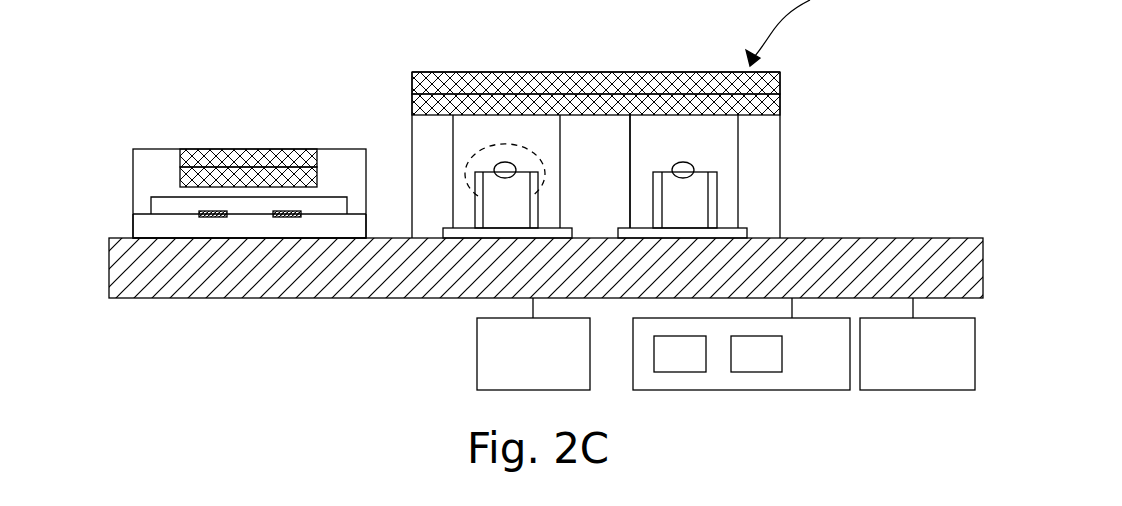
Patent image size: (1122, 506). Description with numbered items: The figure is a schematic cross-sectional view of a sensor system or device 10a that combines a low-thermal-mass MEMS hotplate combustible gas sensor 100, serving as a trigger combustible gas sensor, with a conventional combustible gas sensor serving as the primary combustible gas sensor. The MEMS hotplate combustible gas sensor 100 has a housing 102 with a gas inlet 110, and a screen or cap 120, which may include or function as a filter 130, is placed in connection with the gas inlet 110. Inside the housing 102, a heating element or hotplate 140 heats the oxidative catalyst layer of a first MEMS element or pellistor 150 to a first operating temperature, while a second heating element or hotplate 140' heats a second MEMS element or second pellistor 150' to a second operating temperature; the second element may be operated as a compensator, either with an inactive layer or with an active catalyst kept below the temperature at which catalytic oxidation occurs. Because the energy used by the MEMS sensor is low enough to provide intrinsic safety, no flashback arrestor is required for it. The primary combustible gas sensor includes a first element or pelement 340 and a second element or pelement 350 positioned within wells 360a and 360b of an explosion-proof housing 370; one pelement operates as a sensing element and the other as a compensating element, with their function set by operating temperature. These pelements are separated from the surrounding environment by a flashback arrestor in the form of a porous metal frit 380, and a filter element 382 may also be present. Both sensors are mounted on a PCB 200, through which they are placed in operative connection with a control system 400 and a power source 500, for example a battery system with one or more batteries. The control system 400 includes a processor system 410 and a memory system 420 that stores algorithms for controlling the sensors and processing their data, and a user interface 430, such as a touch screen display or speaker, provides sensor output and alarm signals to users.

The sensor system 10a is at (884, 29).
The MEMS hotplate combustible gas sensor 100 is at (116, 133).
The housing 102 is at (133, 214).
The gas inlet 110 is at (182, 168).
The screen or cap 120 is at (203, 157).
The filter 130 is at (242, 175).
The heating element or hotplate 140 is at (190, 289).
The heating element or hotplate 140' is at (288, 281).
The first MEMS element or pellistor 150 is at (158, 181).
The second MEMS element or second pellistor 150' is at (316, 164).
The PCB 200 is at (897, 252).
The first element or pelement 340 is at (457, 163).
The second element or pelement 350 is at (663, 153).
The well 360a is at (552, 200).
The well 360b is at (727, 193).
The explosion-proof housing 370 is at (785, 143).
The porous metal frit 380 is at (423, 88).
The filter element 382 is at (780, 100).
The control system 400 is at (741, 344).
The processor system 410 is at (680, 354).
The memory system 420 is at (756, 354).
The user interface 430 is at (917, 344).
The power source 500 is at (533, 344).